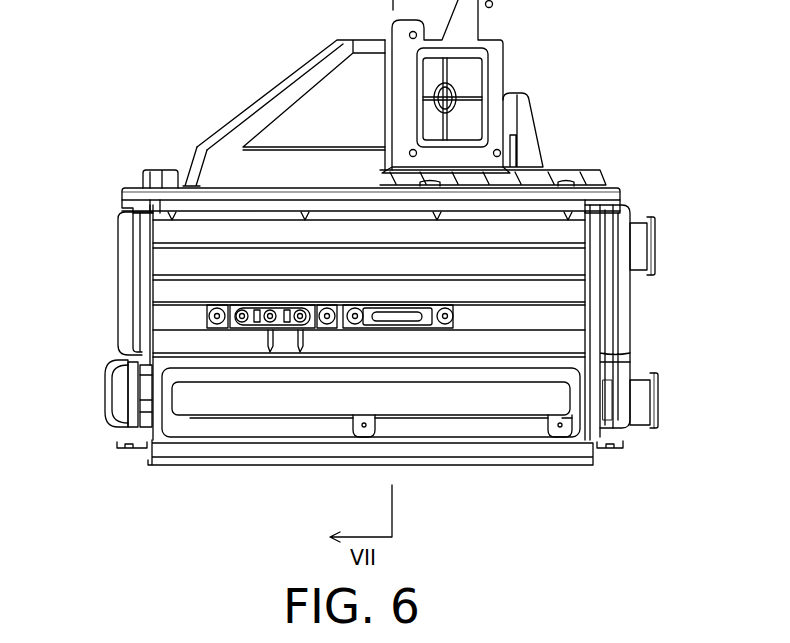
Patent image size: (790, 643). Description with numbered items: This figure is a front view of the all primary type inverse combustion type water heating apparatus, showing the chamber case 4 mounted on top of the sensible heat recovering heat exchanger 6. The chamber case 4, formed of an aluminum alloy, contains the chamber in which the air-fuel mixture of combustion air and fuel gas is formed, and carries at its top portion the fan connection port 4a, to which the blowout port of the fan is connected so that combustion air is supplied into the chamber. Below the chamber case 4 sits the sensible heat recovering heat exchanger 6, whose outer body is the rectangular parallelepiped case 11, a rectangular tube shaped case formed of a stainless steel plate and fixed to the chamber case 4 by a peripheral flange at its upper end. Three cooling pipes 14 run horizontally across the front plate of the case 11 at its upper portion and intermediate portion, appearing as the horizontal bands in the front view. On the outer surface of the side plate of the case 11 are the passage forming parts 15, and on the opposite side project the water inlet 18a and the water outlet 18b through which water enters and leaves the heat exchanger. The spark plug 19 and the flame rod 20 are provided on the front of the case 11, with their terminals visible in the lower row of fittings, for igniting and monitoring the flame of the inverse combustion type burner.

The chamber case 4 is at (270, 90).
The fan connection port 4a is at (468, 75).
The sensible heat recovering heat exchanger 6 is at (84, 338).
The case 11 is at (519, 464).
The cooling pipes 14 is at (442, 245).
The passage forming parts 15 is at (105, 398).
The water inlet 18a is at (650, 400).
The water outlet 18b is at (649, 246).
The spark plug 19 is at (300, 352).
The flame rod 20 is at (239, 326).